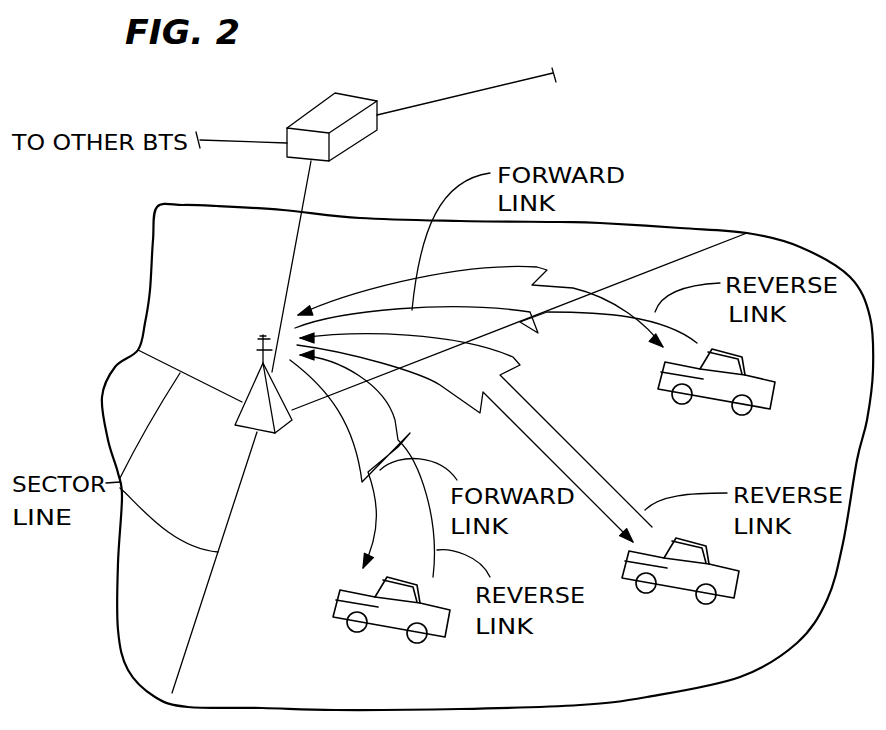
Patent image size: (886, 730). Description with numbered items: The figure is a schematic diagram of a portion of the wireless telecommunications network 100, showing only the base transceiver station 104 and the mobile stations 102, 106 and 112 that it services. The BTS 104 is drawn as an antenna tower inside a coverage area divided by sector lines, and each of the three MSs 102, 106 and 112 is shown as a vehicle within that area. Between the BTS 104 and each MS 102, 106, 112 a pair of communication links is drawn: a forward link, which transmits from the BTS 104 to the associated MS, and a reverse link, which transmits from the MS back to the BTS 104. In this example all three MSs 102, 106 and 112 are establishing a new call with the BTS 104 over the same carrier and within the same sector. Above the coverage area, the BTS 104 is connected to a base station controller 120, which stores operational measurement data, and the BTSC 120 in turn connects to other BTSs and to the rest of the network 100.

The wireless telecommunications network 100 is at (576, 89).
The mobile station 102 is at (391, 638).
The base transceiver station 104 is at (235, 398).
The mobile station 106 is at (716, 407).
The mobile station 112 is at (680, 601).
The base station controller 120 is at (324, 212).